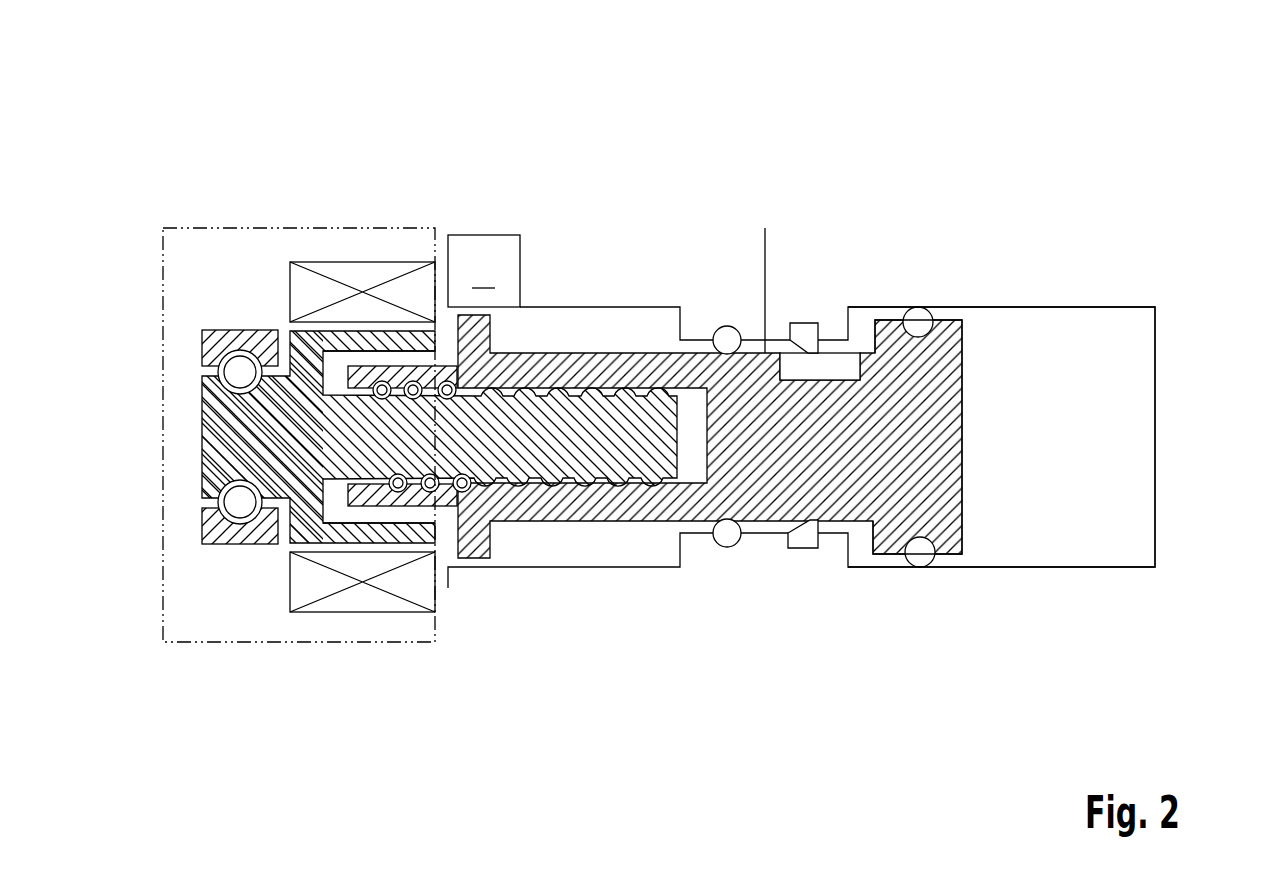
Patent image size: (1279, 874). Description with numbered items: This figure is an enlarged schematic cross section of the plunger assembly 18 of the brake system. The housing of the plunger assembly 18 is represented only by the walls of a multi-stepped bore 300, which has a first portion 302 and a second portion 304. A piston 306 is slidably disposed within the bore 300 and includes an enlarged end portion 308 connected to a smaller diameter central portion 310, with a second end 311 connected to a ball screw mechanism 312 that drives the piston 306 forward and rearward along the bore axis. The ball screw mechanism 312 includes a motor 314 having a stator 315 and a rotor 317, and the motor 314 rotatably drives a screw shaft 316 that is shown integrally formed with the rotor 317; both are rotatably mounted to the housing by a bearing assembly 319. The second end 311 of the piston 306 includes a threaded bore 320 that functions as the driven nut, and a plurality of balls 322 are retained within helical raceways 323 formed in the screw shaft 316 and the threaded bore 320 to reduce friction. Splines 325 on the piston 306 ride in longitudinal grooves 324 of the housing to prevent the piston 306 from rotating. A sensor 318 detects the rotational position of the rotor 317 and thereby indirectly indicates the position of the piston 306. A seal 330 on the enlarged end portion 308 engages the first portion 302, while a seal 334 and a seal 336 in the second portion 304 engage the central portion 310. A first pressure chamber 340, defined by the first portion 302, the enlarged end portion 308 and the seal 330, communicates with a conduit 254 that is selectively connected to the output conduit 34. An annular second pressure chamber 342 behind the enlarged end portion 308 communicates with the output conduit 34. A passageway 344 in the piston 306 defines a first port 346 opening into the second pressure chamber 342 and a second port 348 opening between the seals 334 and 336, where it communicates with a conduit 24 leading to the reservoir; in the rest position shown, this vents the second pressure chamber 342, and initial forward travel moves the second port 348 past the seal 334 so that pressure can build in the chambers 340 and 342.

The plunger assembly 18 is at (1129, 137).
The conduit 24 is at (765, 268).
The output conduit 34 is at (867, 567).
The conduit 254 is at (1138, 570).
The multi-stepped bore 300 is at (1050, 567).
The first portion of the bore 302 is at (1080, 307).
The second portion of the bore 304 is at (762, 533).
The piston 306 is at (942, 377).
The enlarged end portion 308 is at (962, 557).
The central portion 310 is at (850, 567).
The second end 311 is at (562, 507).
The ball screw mechanism 312 is at (297, 195).
The motor 314 is at (265, 229).
The stator 315 is at (331, 262).
The screw shaft 316 is at (596, 416).
The rotor 317 is at (407, 342).
The sensor 318 is at (483, 235).
The bearing assembly 319 is at (233, 331).
The threaded bore 320 is at (460, 500).
The balls 322 is at (394, 495).
The helical raceways 323 is at (378, 389).
The longitudinal grooves 324 is at (613, 567).
The splines 325 is at (464, 495).
The seal 330 is at (920, 567).
The seal 334 is at (805, 323).
The seal 336 is at (727, 326).
The first pressure chamber 340 is at (1145, 430).
The second pressure chamber 342 is at (868, 350).
The passageway 344 is at (888, 350).
The first port 346 is at (838, 393).
The second port 348 is at (777, 353).